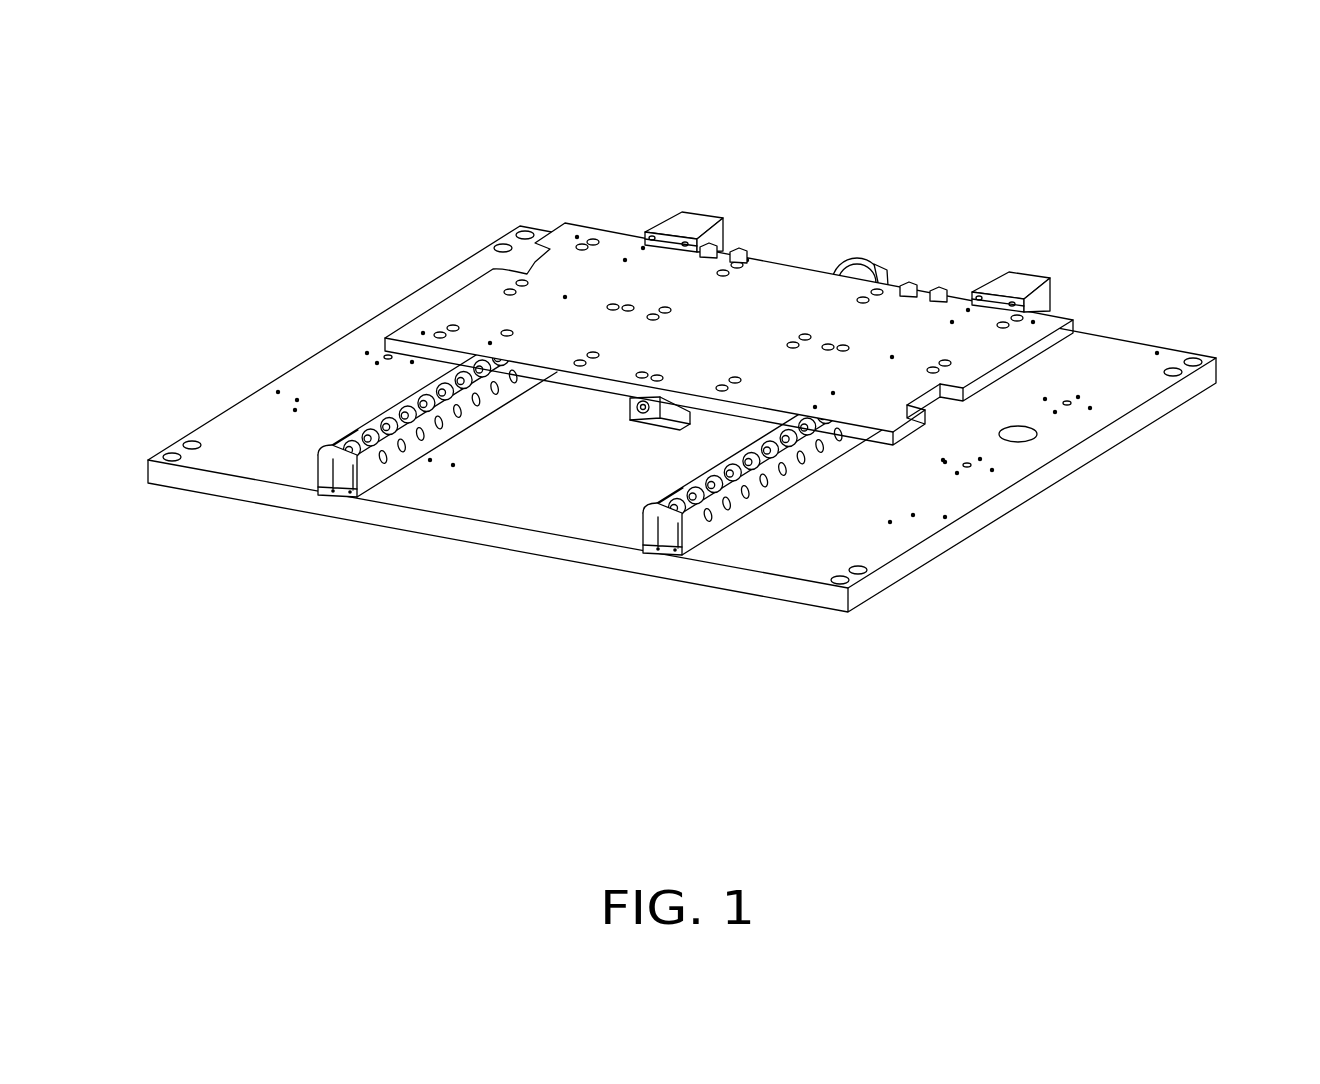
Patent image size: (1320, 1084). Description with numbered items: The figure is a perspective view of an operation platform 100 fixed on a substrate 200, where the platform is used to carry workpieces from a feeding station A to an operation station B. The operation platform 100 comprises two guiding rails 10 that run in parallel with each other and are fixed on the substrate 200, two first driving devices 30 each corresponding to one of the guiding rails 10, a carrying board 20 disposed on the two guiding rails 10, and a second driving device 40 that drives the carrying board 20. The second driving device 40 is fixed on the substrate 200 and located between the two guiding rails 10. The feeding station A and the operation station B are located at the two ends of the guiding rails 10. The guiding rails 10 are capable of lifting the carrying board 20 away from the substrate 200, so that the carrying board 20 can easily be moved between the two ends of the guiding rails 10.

The operation platform 100 is at (1047, 217).
The guiding rails 10 is at (488, 373).
The carrying board 20 is at (608, 257).
The first driving devices 30 is at (700, 220).
The second driving device 40 is at (853, 277).
The substrate 200 is at (1122, 372).
The feeding station A is at (518, 258).
The operation station B is at (342, 380).